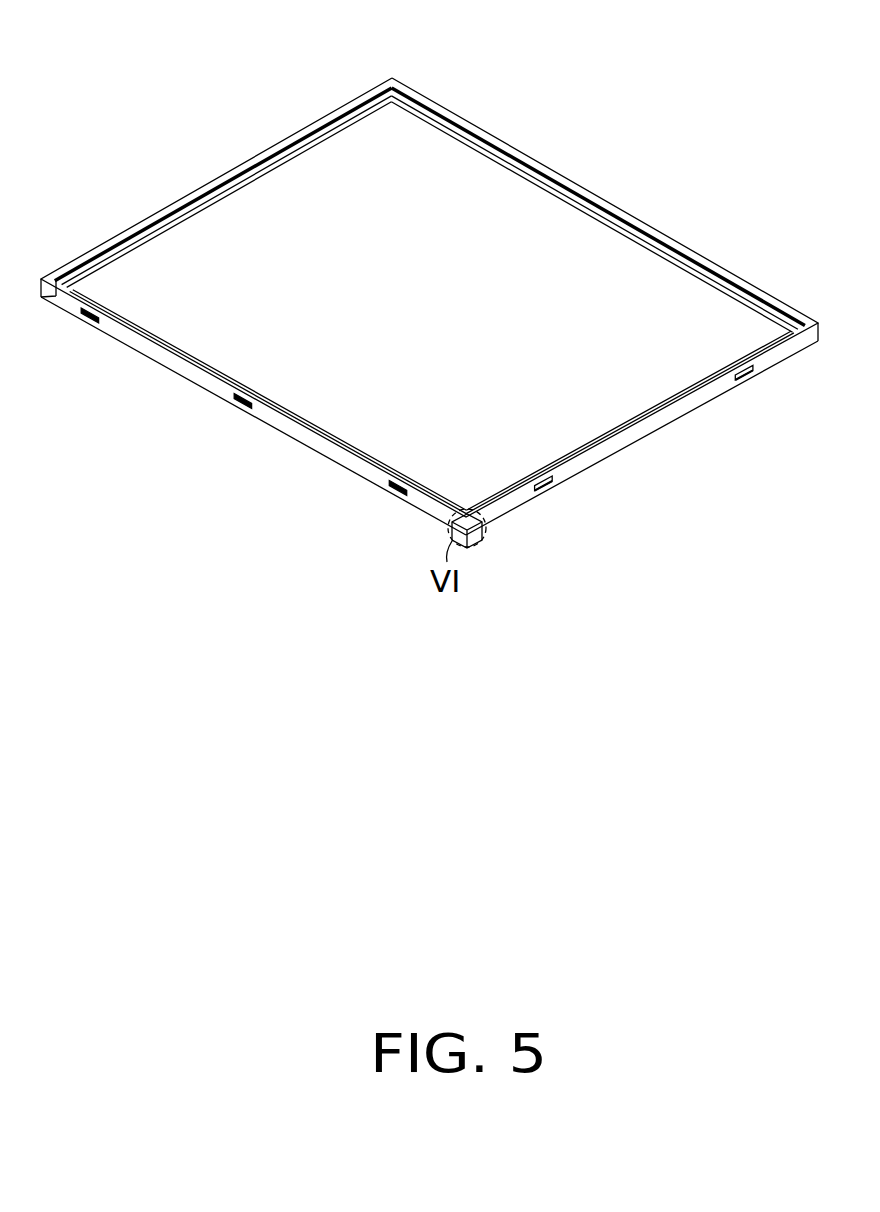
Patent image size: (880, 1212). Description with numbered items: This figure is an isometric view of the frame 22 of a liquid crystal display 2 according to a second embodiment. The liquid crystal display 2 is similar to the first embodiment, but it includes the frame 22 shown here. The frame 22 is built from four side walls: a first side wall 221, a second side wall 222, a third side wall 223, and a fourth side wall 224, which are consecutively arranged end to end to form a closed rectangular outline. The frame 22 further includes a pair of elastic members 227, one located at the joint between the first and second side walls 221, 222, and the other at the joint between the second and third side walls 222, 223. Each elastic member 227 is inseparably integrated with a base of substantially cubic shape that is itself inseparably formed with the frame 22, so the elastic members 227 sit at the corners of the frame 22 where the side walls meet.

The liquid crystal display 2 is at (451, 48).
The frame 22 is at (253, 125).
The first side wall 221 is at (623, 445).
The second side wall 222 is at (328, 453).
The third side wall 223 is at (190, 196).
The fourth side wall 224 is at (633, 217).
The elastic member 227 is at (478, 526).